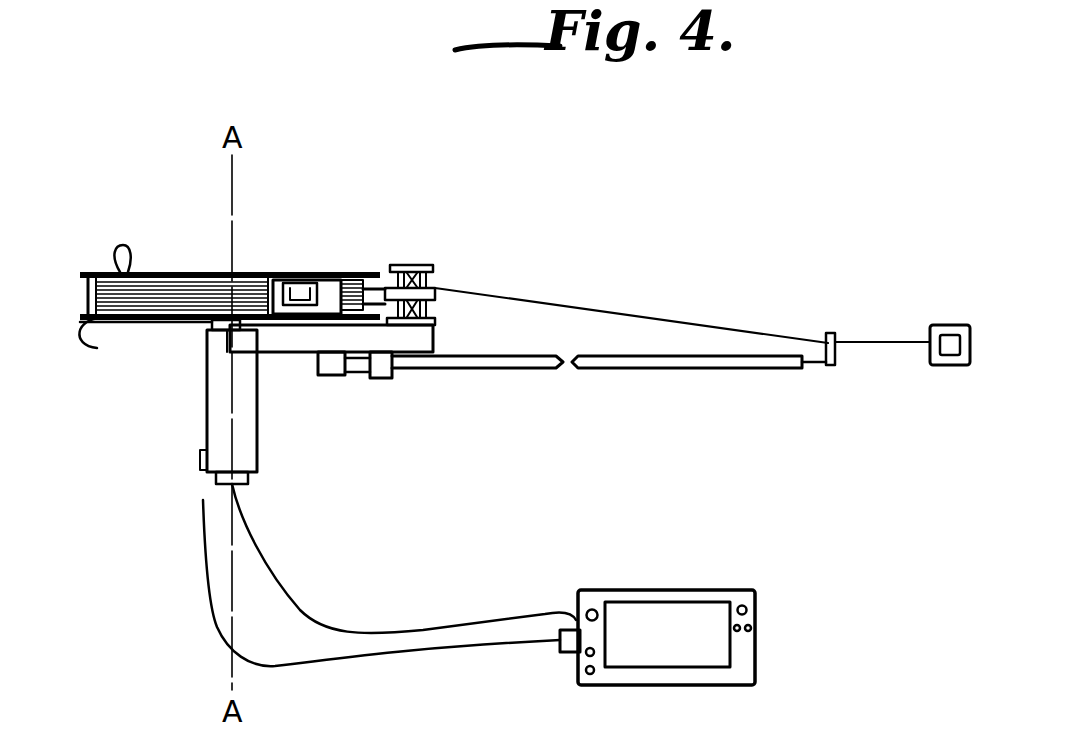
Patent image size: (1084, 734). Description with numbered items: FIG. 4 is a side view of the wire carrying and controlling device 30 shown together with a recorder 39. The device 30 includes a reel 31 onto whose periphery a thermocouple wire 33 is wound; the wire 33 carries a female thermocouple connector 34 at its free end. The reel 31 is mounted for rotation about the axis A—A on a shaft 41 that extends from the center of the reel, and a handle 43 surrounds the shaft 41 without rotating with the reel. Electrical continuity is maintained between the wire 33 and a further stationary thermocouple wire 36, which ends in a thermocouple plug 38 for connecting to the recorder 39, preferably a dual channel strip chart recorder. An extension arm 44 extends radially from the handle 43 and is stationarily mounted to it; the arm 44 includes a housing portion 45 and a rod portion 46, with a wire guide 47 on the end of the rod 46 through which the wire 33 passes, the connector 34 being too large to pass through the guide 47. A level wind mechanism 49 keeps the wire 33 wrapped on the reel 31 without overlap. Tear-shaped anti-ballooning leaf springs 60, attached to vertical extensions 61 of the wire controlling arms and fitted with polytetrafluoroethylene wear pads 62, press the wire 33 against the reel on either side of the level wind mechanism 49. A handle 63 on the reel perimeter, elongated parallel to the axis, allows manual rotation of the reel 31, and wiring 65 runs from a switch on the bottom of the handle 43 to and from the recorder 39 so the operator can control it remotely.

The device 30 is at (402, 240).
The reel 31 is at (188, 322).
The thermocouple wire 33 is at (660, 308).
The female thermocouple connector 34 is at (946, 360).
The thermocouple wire 36 is at (297, 663).
The thermocouple plug 38 is at (567, 652).
The recorder 39 is at (780, 580).
The shaft 41 is at (213, 326).
The handle 43 is at (258, 445).
The extension arm 44 is at (393, 390).
The housing portion 45 is at (430, 339).
The rod portion 46 is at (626, 371).
The wire guide 47 is at (835, 366).
The level wind mechanism 49 is at (452, 270).
The leaf spring 60 is at (310, 278).
The vertical extension 61 is at (275, 278).
The wear pad 62 is at (297, 278).
The handle 63 is at (125, 262).
The wiring 65 is at (323, 623).